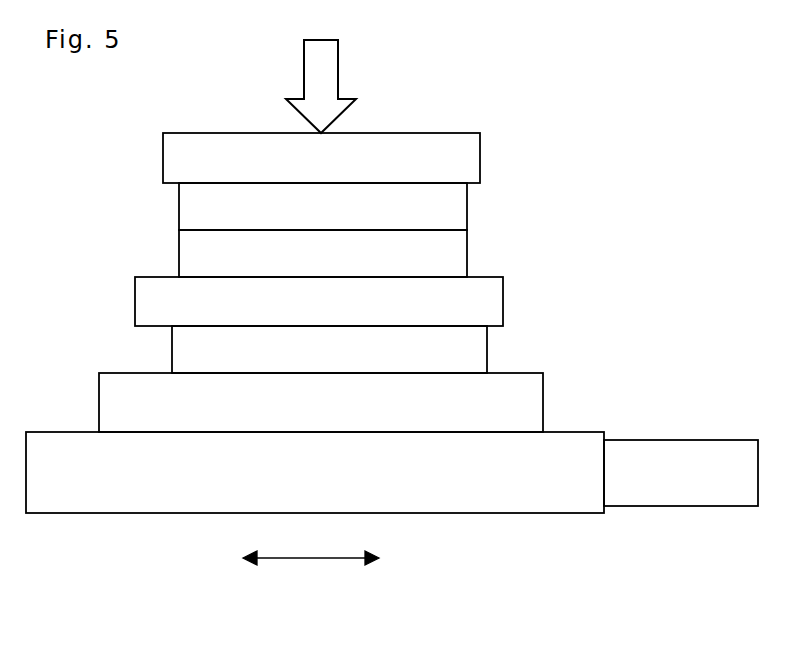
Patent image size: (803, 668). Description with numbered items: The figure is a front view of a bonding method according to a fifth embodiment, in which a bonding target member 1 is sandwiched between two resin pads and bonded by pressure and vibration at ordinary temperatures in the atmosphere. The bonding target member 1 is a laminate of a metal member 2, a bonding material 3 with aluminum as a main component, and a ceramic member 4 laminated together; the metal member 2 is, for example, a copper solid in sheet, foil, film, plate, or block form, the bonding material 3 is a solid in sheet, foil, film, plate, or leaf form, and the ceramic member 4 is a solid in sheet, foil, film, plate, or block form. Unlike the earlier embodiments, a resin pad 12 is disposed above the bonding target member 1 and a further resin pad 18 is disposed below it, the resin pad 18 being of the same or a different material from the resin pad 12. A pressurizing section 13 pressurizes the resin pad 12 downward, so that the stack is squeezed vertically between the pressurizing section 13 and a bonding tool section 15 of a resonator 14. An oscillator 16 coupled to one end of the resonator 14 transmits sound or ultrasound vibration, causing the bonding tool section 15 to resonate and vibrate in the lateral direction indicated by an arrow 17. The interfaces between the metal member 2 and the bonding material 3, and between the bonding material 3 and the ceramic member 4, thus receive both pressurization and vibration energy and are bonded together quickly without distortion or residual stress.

The bonding target member 1 is at (322, 254).
The metal member 2 is at (152, 301).
The bonding material 3 is at (193, 253).
The ceramic member 4 is at (193, 204).
The resin pad 12 is at (472, 163).
The pressurizing section 13 is at (333, 71).
The resonator 14 is at (561, 502).
The bonding tool section 15 is at (531, 403).
The oscillator 16 is at (723, 493).
The arrow 17 is at (311, 558).
The resin pad 18 is at (476, 349).